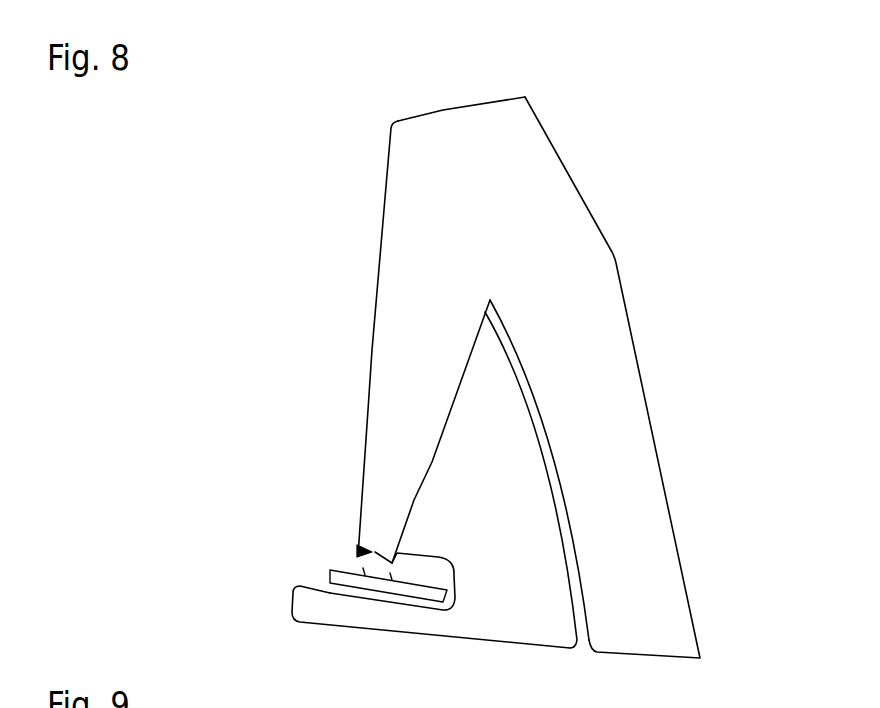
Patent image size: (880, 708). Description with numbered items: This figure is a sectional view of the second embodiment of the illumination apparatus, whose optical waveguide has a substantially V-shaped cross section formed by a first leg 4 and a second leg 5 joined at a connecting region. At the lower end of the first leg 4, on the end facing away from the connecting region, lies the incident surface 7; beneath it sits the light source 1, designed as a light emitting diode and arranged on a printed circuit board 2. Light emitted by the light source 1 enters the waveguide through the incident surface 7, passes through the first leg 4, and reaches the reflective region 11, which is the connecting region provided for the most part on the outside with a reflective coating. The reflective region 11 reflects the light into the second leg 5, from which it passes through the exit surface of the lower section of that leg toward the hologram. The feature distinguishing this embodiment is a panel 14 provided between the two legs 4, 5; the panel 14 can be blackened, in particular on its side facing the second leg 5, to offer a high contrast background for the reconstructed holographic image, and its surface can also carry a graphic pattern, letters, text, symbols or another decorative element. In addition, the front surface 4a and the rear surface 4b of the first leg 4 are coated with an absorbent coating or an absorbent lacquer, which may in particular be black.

The light source 1 is at (377, 574).
The printed circuit board 2 is at (413, 595).
The first leg 4 is at (360, 413).
The front surface 4a is at (372, 350).
The rear surface 4b is at (432, 462).
The second leg 5 is at (664, 424).
The incident surface 7 is at (375, 552).
The reflective region 11 is at (443, 110).
The panel 14 is at (517, 510).